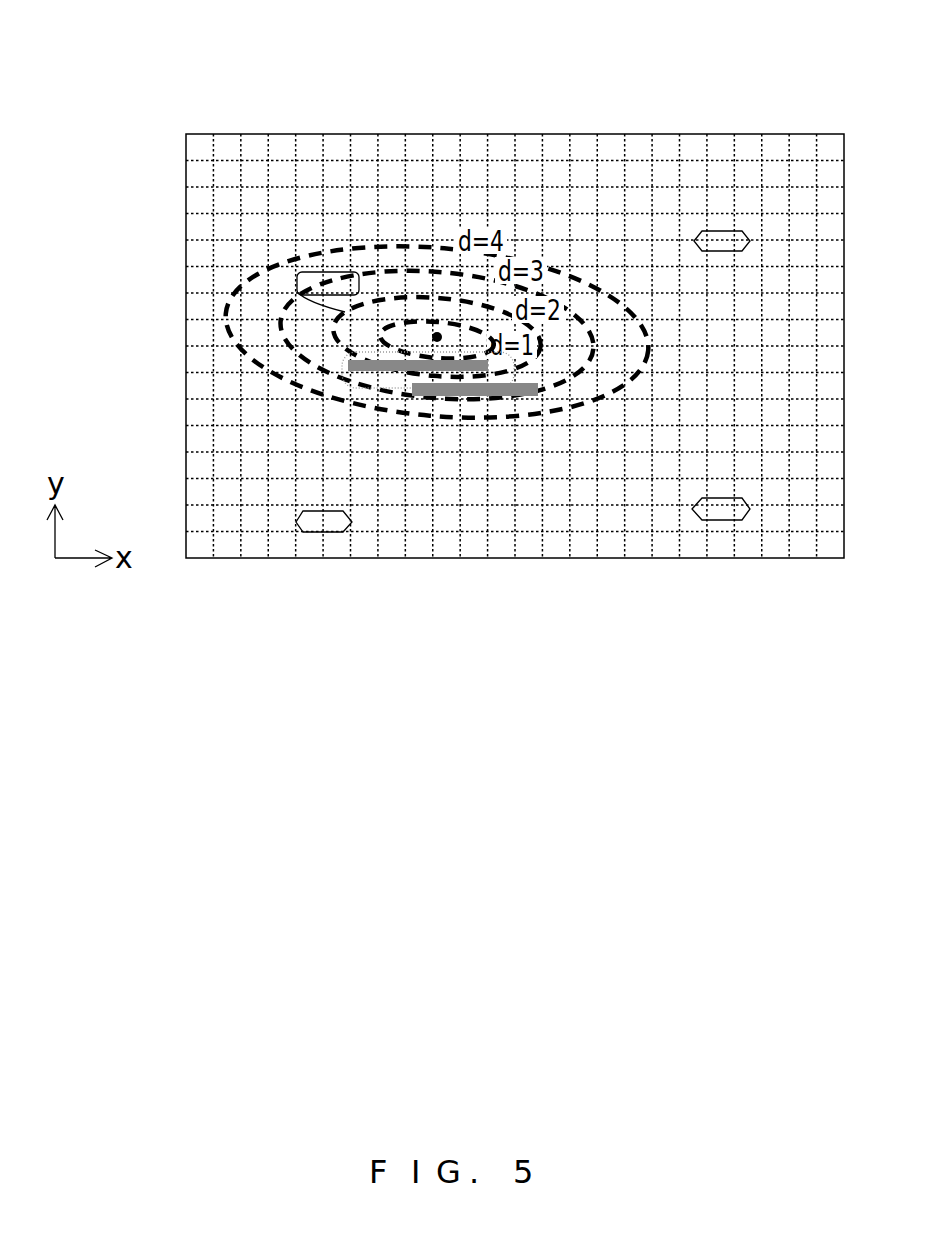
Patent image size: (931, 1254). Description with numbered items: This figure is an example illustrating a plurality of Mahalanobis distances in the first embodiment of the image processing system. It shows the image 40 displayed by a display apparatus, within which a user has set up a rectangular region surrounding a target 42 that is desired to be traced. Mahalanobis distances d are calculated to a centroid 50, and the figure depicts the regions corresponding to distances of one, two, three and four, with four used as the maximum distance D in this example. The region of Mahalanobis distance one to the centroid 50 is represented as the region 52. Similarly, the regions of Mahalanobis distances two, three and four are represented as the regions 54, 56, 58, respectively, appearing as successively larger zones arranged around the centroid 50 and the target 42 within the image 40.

The image 40 is at (673, 93).
The target 42 is at (412, 383).
The centroid 50 is at (460, 360).
The region 52 is at (380, 338).
The region 54 is at (297, 291).
The region 56 is at (345, 312).
The region 58 is at (317, 278).